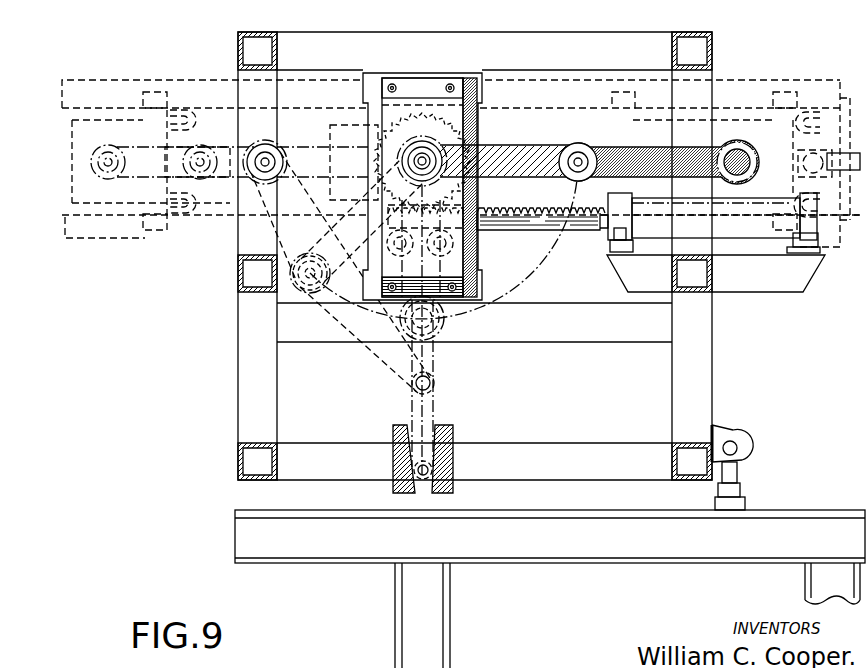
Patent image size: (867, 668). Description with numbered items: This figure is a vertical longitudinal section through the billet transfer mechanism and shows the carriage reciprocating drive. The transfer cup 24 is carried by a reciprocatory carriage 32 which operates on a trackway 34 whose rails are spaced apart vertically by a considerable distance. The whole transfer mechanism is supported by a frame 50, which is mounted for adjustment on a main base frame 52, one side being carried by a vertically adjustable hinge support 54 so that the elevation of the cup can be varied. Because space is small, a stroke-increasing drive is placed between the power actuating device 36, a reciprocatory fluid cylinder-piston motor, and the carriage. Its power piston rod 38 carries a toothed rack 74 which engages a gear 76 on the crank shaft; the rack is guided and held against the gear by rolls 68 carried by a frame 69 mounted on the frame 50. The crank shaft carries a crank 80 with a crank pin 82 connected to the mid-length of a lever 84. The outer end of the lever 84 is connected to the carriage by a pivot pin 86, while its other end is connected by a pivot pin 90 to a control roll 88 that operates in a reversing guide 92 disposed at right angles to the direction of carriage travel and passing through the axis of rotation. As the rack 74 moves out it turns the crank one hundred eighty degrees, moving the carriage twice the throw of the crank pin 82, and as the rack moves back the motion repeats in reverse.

The transfer cup 24 is at (330, 200).
The reciprocatory carriage 32 is at (72, 202).
The trackway 34 is at (840, 84).
The power actuating device 36 is at (718, 236).
The power piston rod 38 is at (603, 244).
The frame 50 is at (712, 56).
The main base frame 52 is at (226, 550).
The vertically adjustable hinge support 54 is at (741, 465).
The rolls 68 is at (463, 262).
The frame 69 is at (450, 117).
The toothed rack 74 is at (553, 230).
The gear 76 is at (403, 135).
The crank 80 is at (293, 145).
The crank pin 82 is at (262, 152).
The lever 84 is at (643, 157).
The pivot pin 86 is at (737, 160).
The control roll 88 is at (430, 173).
The pivot pin 90 is at (430, 378).
The reversing guide 92 is at (445, 453).